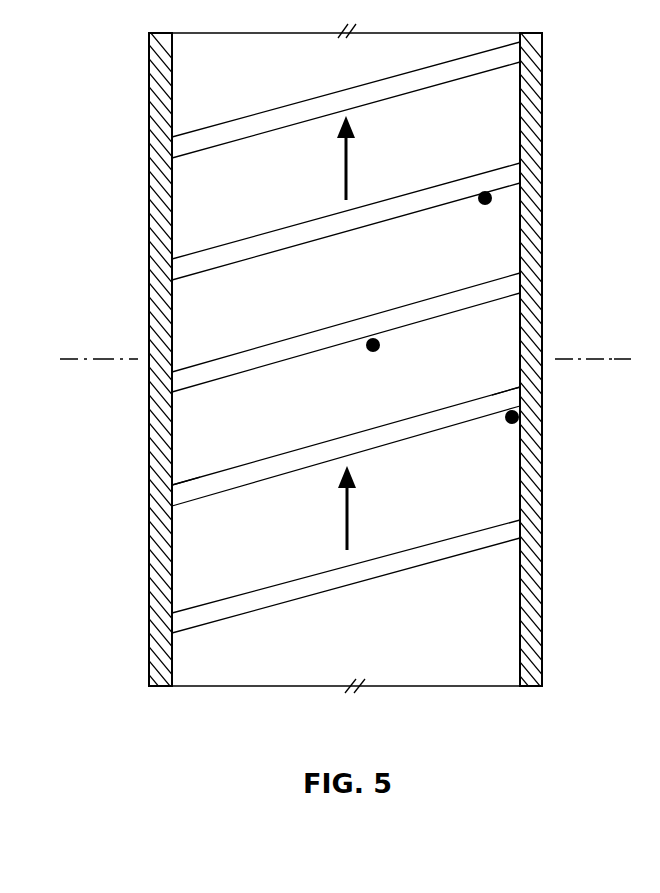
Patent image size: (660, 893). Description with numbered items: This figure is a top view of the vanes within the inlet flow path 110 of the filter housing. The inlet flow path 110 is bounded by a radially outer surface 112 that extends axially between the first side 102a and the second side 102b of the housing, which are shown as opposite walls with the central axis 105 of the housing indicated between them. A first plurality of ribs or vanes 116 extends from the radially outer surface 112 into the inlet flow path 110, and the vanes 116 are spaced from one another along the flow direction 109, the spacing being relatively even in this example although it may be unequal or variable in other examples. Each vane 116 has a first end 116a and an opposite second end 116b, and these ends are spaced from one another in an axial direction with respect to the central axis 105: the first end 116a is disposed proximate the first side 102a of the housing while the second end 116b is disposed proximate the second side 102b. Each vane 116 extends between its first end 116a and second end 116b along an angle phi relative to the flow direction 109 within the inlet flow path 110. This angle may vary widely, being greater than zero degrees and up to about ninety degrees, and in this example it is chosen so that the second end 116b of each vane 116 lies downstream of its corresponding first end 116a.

The first side 102a is at (147, 221).
The second side 102b is at (545, 216).
The central axis 105 is at (101, 361).
The flow direction 109 is at (380, 508).
The inlet flow path 110 is at (505, 110).
The radially outer surface 112 is at (187, 82).
The vanes 116 is at (328, 95).
The first end 116a is at (175, 482).
The second end 116b is at (517, 384).